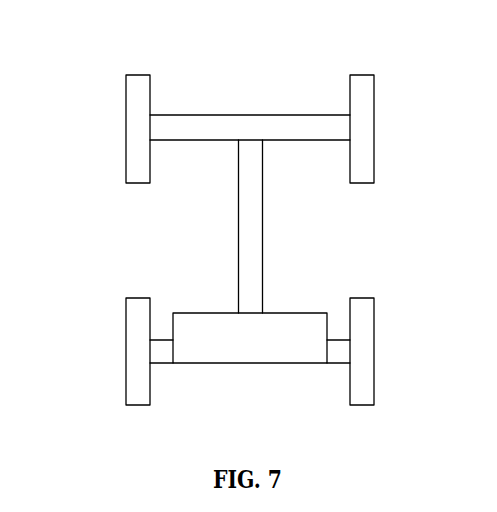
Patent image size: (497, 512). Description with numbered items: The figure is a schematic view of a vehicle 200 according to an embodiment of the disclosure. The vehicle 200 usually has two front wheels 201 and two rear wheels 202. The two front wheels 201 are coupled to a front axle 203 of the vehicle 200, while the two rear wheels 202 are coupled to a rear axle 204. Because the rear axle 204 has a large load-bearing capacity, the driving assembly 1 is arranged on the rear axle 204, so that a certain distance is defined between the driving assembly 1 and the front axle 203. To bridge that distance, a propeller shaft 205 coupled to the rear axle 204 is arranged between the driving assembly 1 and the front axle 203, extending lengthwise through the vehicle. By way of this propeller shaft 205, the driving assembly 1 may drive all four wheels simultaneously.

The vehicle 200 is at (105, 82).
The front wheels 201 is at (375, 103).
The rear wheels 202 is at (375, 328).
The front axle 203 is at (277, 125).
The rear axle 204 is at (335, 356).
The propeller shaft 205 is at (258, 245).
The driving assembly 1 is at (252, 355).